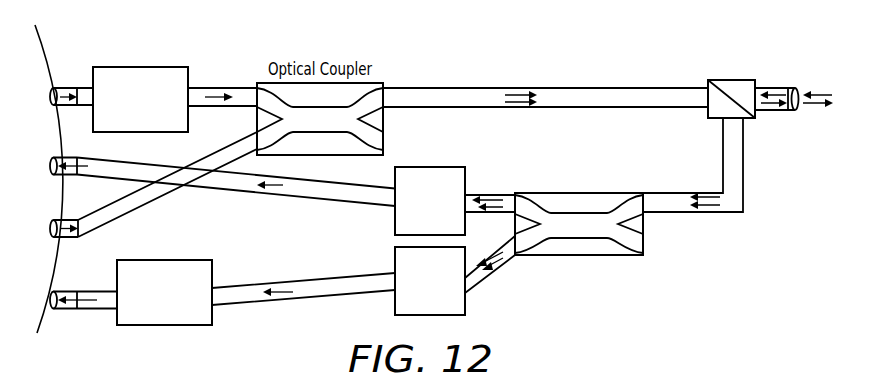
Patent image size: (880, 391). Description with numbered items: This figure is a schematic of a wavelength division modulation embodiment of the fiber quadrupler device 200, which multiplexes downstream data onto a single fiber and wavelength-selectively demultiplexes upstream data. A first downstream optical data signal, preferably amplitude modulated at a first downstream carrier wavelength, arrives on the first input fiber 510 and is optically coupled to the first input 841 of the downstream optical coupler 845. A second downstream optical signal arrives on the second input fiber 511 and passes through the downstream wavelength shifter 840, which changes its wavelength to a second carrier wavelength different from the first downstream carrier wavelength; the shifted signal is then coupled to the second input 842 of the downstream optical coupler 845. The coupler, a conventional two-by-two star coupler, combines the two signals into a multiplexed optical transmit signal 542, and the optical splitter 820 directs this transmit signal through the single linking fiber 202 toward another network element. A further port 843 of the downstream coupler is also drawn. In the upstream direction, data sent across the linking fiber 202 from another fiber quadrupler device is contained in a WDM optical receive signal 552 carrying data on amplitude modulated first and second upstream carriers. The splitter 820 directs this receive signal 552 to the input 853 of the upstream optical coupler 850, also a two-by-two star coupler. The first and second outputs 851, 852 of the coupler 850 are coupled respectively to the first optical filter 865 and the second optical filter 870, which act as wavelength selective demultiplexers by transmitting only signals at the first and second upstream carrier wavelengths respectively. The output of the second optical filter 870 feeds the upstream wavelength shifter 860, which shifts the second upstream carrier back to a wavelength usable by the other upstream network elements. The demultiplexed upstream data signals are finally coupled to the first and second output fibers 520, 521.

The second input fiber 511 is at (58, 88).
The downstream wavelength shifter 840 is at (117, 67).
The second input of optical coupler 842 is at (257, 83).
The downstream optical coupler 845 is at (380, 83).
The multiplexed optical transmit signal 542 is at (463, 97).
The single linking fiber 202 is at (778, 88).
The optical splitter 820 is at (708, 83).
The first input of optical coupler 841 is at (257, 126).
The fourth port of optical coupler 843 is at (385, 108).
The first output fiber 520 is at (58, 157).
The first input fiber 510 is at (58, 220).
The first output of upstream optical coupler 851 is at (515, 193).
The input of upstream optical coupler 853 is at (642, 193).
The first optical filter 865 is at (395, 220).
The WDM optical receive signal 552 is at (727, 207).
The second optical filter 870 is at (395, 255).
The upstream wavelength shifter 860 is at (170, 260).
The second output fiber 521 is at (58, 292).
The second output of upstream optical coupler 852 is at (515, 255).
The upstream optical coupler 850 is at (588, 255).
The fiber quadrupler device 200 is at (709, 279).